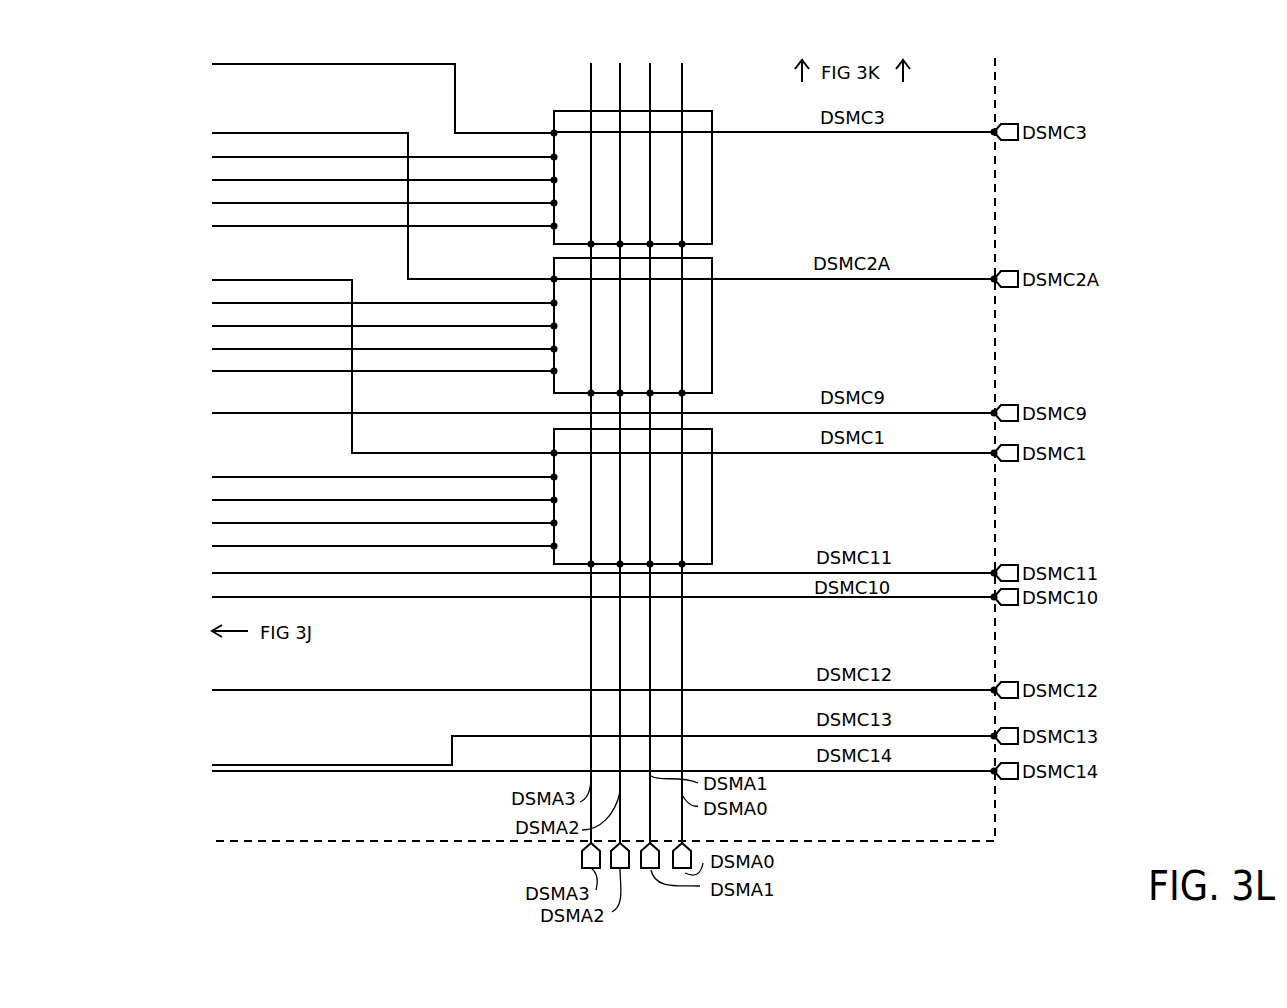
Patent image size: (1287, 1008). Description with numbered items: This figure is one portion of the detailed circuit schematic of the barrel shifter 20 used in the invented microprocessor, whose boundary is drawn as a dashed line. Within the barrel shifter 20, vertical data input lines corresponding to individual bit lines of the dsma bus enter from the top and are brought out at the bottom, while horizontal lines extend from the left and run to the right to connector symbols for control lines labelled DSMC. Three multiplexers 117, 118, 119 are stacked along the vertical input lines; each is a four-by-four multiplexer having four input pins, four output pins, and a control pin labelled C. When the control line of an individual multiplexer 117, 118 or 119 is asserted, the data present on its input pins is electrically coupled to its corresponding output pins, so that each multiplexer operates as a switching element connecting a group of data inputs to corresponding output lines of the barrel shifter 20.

The multiplexer 117 is at (712, 117).
The multiplexer 118 is at (726, 252).
The multiplexer 119 is at (712, 518).
The barrel shifter 20 is at (945, 843).